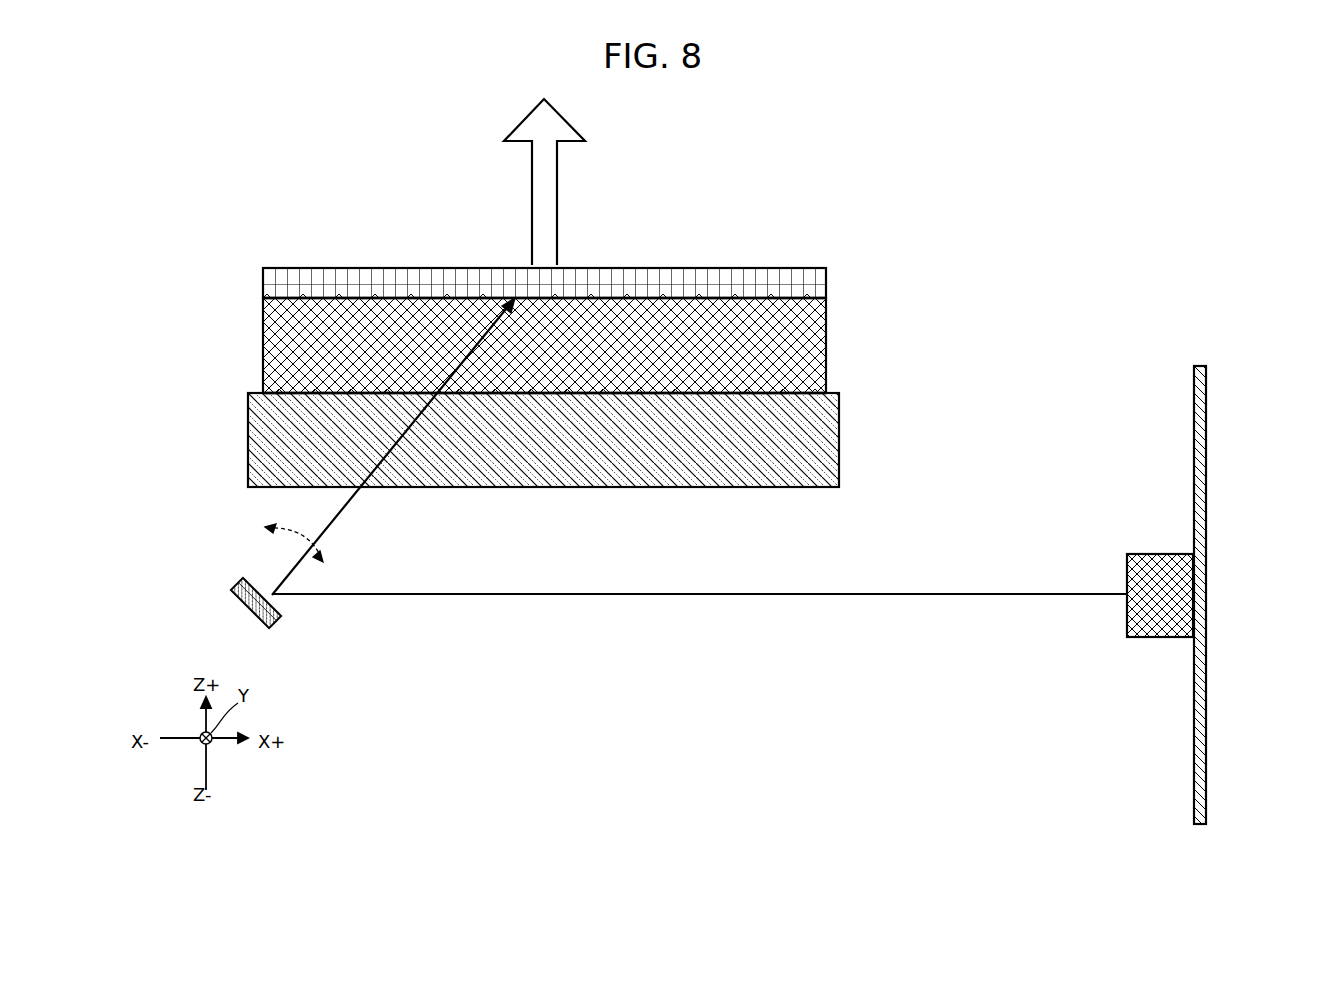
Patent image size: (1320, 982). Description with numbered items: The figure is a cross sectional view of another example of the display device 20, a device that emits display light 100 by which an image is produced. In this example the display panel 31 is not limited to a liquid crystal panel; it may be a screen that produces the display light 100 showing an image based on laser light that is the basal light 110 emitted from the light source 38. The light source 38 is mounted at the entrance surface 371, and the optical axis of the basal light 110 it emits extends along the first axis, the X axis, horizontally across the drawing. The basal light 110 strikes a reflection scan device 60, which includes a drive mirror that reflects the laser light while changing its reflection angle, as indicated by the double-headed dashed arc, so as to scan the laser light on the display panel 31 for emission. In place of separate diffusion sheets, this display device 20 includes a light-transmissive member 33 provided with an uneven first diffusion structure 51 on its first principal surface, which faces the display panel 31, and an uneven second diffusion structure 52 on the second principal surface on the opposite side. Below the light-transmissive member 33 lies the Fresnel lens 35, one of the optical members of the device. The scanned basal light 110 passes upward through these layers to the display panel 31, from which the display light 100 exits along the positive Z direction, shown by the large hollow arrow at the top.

The display device 20 is at (1058, 183).
The display panel 31 is at (827, 285).
The first diffusion structure 51 is at (827, 301).
The light-transmissive member 33 is at (827, 339).
The second diffusion structure 52 is at (827, 393).
The Fresnel lens 35 is at (840, 441).
The display light 100 is at (558, 186).
The basal light 110 is at (716, 597).
The reflection scan device 60 is at (269, 629).
The light source 38 is at (1160, 553).
The entrance surface 371 is at (1183, 625).